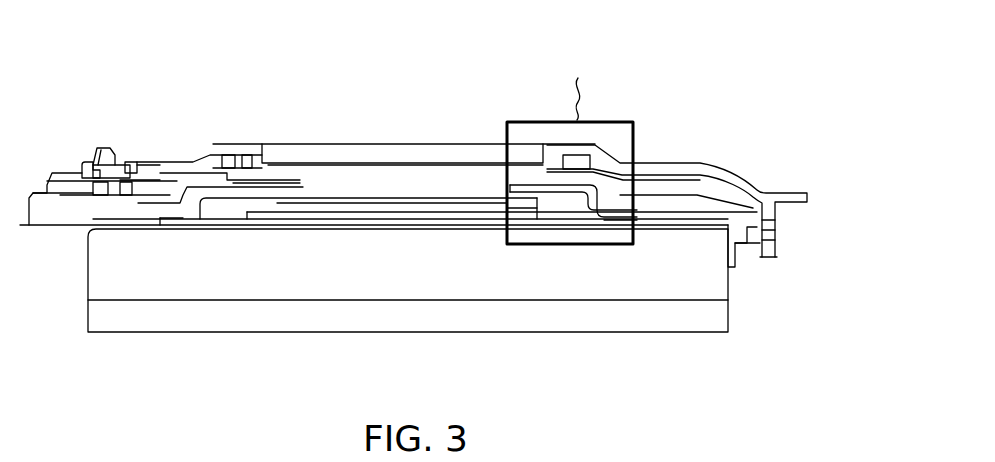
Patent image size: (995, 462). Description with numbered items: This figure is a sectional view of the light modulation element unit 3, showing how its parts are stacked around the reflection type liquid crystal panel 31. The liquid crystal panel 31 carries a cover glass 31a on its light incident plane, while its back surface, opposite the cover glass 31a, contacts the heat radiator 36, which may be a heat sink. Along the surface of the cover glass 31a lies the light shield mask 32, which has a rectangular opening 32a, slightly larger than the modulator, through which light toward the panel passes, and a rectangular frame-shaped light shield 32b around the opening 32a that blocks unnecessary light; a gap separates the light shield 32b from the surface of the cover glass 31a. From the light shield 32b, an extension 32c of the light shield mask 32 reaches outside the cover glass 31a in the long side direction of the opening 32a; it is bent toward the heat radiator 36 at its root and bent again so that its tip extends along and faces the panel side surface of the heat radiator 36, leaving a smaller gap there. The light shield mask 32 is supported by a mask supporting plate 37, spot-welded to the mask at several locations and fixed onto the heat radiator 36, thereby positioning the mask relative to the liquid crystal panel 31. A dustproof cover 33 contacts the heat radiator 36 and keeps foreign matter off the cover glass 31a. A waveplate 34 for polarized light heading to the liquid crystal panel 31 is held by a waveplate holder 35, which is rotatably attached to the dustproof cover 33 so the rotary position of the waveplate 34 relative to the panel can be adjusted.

The light modulation element unit 3 is at (464, 44).
The reflection type liquid crystal panel 31 is at (438, 200).
The cover glass 31a is at (350, 198).
The light shield mask 32 is at (568, 192).
The opening 32a is at (305, 189).
The light shield 32b is at (518, 183).
The extension 32c is at (611, 222).
The dustproof cover 33 is at (642, 212).
The waveplate 34 is at (328, 158).
The waveplate holder 35 is at (214, 157).
The heat radiator 36 is at (678, 325).
The mask supporting plate 37 is at (579, 197).